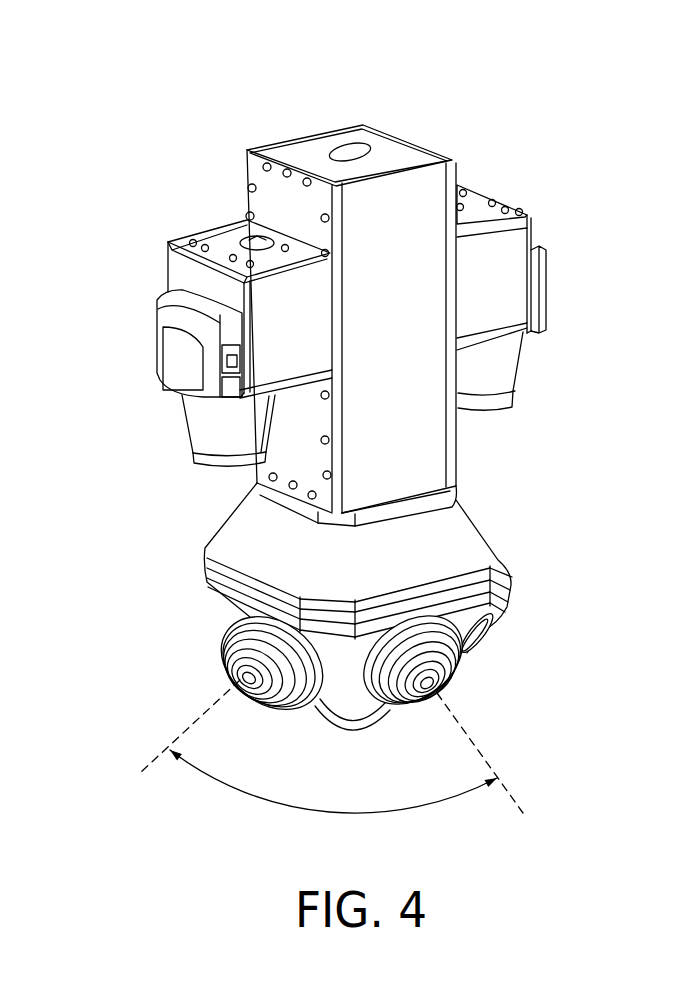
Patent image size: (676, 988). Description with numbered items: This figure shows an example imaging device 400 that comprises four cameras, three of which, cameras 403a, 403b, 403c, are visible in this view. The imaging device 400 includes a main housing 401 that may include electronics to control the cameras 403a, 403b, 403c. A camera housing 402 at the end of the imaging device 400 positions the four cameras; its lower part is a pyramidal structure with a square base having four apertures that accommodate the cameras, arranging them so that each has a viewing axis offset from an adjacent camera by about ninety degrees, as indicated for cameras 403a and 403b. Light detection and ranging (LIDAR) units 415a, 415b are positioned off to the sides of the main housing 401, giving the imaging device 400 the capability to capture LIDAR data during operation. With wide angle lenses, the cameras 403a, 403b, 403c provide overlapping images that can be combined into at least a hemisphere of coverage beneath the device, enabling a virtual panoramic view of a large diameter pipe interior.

The imaging device 400 is at (485, 93).
The main housing 401 is at (427, 442).
The camera housing 402 is at (203, 578).
The camera 403a is at (237, 678).
The camera 403b is at (440, 692).
The camera 403c is at (483, 645).
The light detection and ranging (LIDAR) unit 415a is at (187, 432).
The light detection and ranging (LIDAR) unit 415b is at (517, 375).